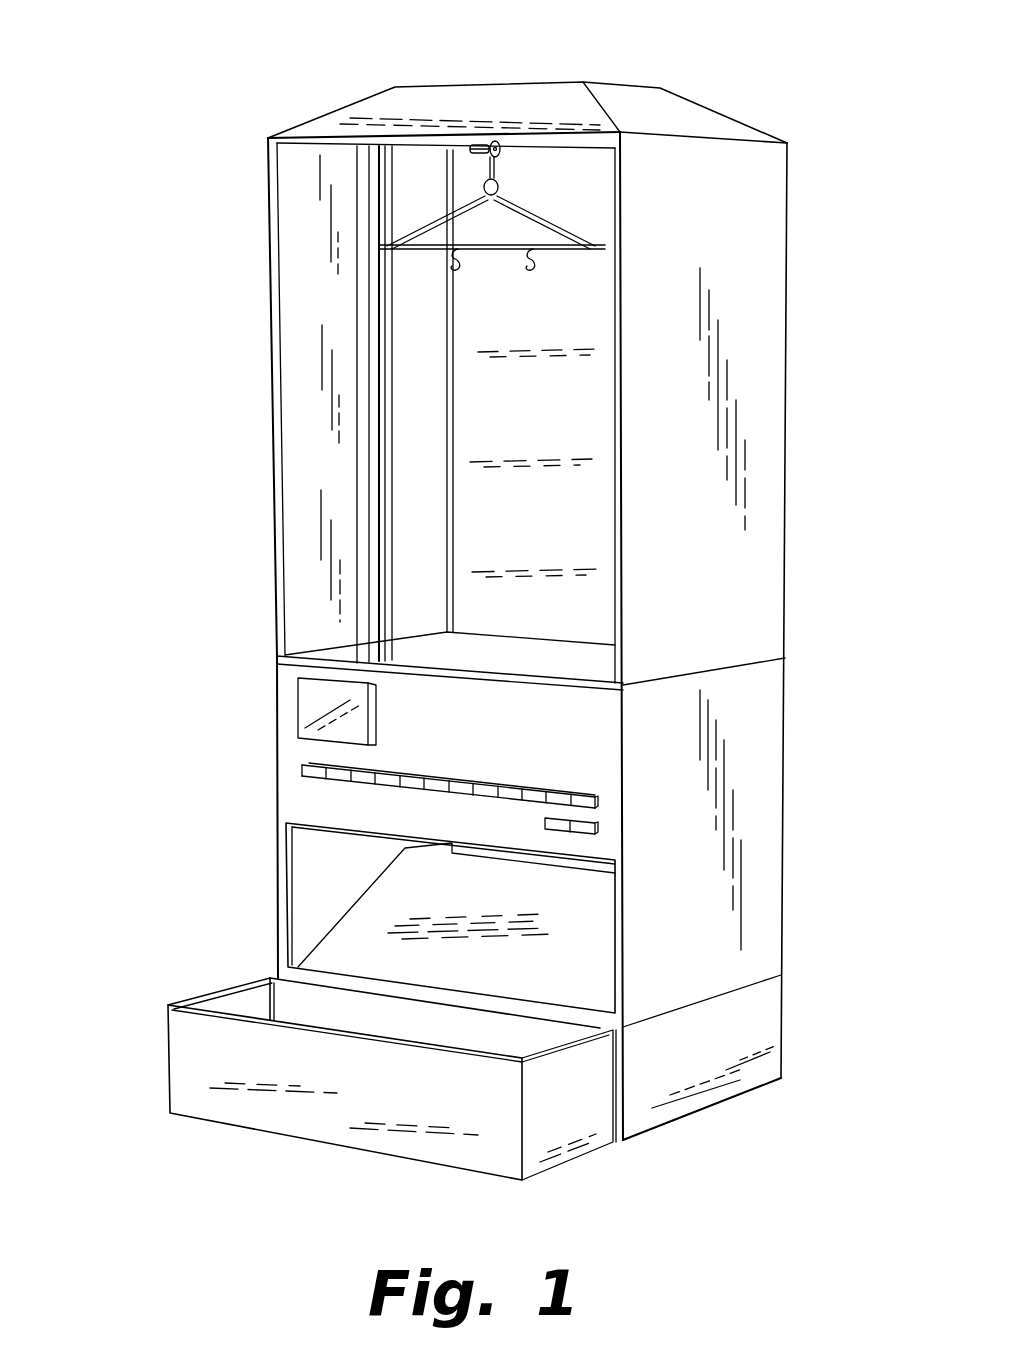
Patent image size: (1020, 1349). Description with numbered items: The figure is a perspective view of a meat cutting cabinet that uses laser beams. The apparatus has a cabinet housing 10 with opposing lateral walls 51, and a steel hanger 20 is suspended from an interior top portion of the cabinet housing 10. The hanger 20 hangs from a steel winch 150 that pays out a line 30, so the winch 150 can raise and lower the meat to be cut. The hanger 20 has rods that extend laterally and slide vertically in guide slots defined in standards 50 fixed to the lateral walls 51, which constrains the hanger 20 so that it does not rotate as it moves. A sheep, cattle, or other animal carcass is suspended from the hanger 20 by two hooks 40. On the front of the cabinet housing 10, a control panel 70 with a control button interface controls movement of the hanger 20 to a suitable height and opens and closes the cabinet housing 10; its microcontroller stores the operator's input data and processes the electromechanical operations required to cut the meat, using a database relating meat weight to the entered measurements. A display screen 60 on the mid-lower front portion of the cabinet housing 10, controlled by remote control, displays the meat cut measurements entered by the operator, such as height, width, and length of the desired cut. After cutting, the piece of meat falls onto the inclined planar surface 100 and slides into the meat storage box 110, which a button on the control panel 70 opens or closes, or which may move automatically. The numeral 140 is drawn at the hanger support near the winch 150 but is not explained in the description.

The cabinet housing 10 is at (270, 447).
The steel hanger 20 is at (456, 214).
The line 30 is at (472, 150).
The hooks 40 is at (454, 262).
The standards 50 is at (368, 466).
The lateral walls 51 is at (322, 264).
The display screen 60 is at (300, 710).
The control panel 70 is at (302, 772).
The inclined planar surface 100 is at (520, 902).
The meat storage box 110 is at (322, 1069).
The support bracket 140 is at (473, 143).
The steel winch 150 is at (493, 148).